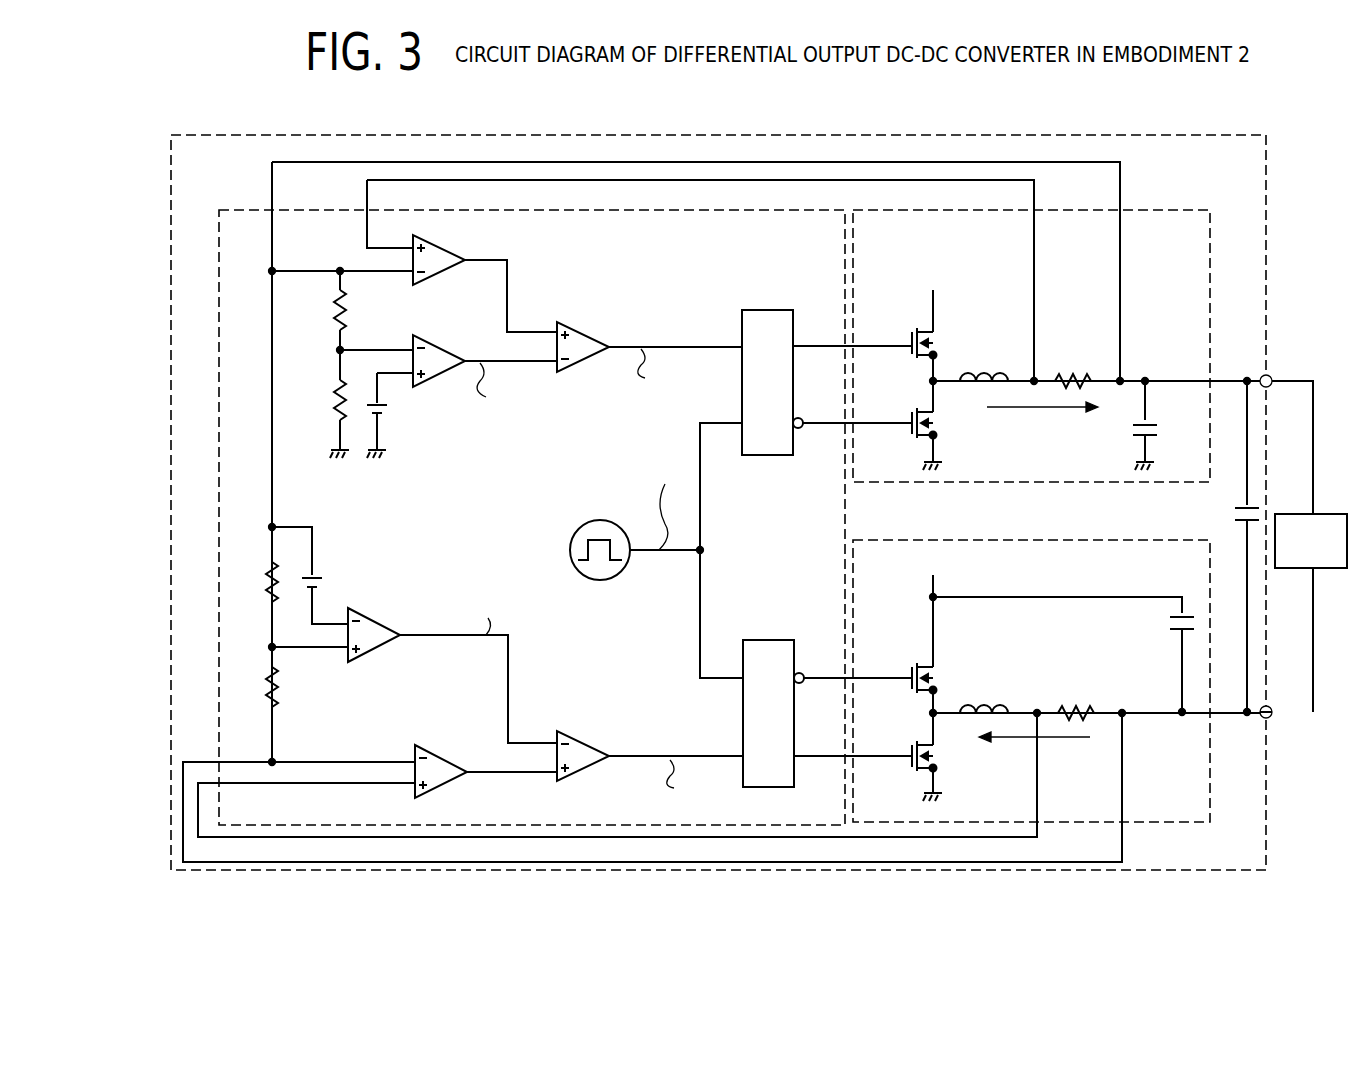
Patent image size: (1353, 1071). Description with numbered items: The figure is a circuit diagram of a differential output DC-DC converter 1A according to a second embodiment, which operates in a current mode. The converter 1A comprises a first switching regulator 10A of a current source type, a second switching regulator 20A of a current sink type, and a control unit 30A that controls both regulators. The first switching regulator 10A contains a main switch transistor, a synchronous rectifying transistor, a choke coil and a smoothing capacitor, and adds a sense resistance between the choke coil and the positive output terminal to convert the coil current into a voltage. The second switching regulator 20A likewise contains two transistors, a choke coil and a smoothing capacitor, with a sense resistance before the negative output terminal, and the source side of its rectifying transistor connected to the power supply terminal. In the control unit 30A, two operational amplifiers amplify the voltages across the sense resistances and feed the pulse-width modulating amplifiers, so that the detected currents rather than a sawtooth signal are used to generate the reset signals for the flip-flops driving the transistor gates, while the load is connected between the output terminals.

The differential output DC-DC converter 1A is at (1266, 190).
The first switching regulator 10A is at (947, 210).
The second switching regulator 20A is at (1180, 822).
The control unit 30A is at (634, 210).